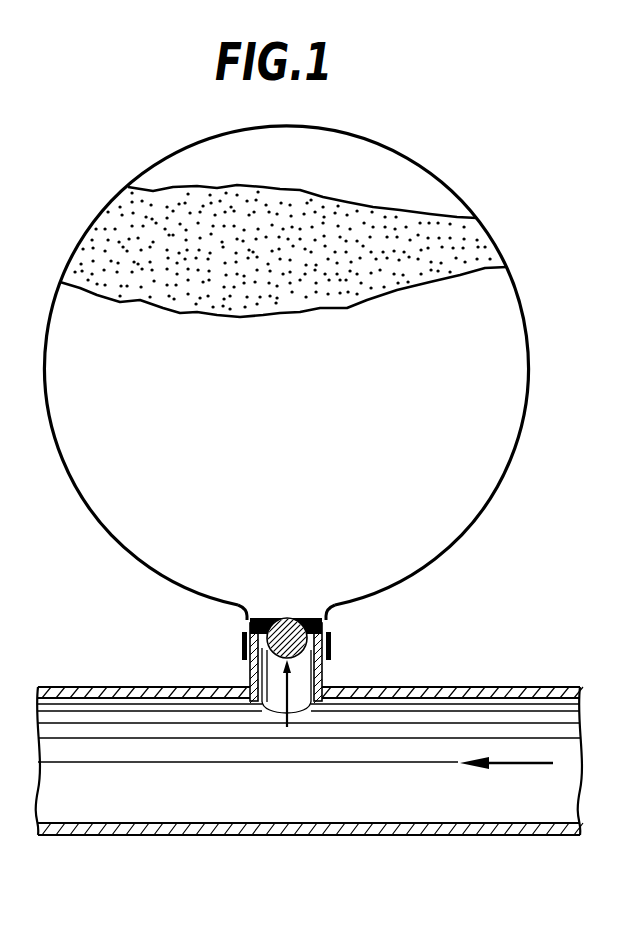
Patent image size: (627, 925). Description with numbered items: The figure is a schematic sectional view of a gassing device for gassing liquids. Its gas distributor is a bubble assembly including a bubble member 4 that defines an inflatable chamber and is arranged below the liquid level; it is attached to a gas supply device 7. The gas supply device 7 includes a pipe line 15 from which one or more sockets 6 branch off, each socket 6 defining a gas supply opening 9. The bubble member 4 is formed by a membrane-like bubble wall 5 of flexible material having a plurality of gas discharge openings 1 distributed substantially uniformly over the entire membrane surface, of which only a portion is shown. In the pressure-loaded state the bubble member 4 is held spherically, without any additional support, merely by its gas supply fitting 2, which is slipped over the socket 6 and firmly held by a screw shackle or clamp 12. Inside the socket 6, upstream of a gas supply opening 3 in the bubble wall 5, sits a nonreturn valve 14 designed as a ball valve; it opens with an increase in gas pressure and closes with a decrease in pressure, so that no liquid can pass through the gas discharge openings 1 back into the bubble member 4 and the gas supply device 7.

The gas discharge openings 1 is at (474, 252).
The gas supply fitting 2 is at (245, 630).
The gas supply opening 3 is at (287, 622).
The bubble member 4 is at (415, 155).
The bubble wall 5 is at (488, 267).
The socket 6 is at (327, 628).
The gas supply device 7 is at (500, 682).
The gas supply opening 9 is at (279, 698).
The screw shackle or clamp 12 is at (332, 652).
The nonreturn valve 14 is at (268, 622).
The pipe line 15 is at (435, 687).